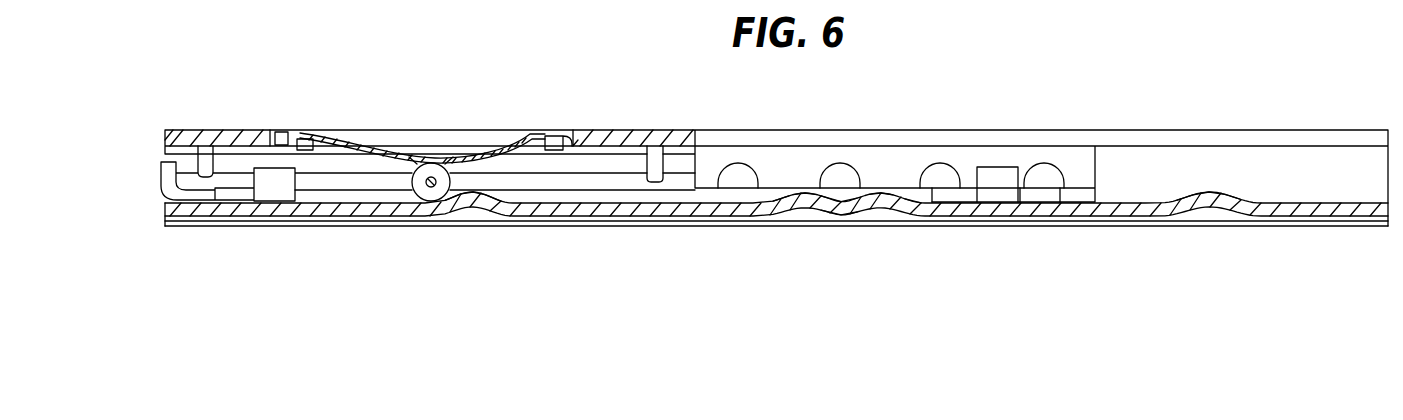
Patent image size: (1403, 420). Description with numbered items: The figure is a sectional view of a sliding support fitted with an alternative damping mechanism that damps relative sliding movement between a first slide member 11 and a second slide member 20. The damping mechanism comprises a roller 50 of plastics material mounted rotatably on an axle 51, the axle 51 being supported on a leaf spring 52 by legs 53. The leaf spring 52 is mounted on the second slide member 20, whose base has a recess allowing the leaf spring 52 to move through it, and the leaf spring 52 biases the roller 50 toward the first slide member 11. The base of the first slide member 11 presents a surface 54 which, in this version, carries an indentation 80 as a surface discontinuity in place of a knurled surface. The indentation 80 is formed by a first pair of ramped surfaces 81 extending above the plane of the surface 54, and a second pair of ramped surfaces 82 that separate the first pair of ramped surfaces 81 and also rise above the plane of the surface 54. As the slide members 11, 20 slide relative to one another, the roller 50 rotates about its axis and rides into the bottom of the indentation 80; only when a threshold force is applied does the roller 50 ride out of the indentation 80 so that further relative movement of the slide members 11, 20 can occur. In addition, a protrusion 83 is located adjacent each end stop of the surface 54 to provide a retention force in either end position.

The first slide member 11 is at (687, 210).
The second slide member 20 is at (655, 147).
The roller 50 is at (431, 189).
The axle 51 is at (432, 165).
The leaf spring 52 is at (378, 138).
The legs 53 is at (547, 135).
The surface 54 is at (619, 191).
The indentation 80 is at (845, 196).
The first pair of ramped surfaces 81 is at (788, 191).
The second pair of ramped surfaces 82 is at (842, 194).
The protrusion 83 is at (485, 205).